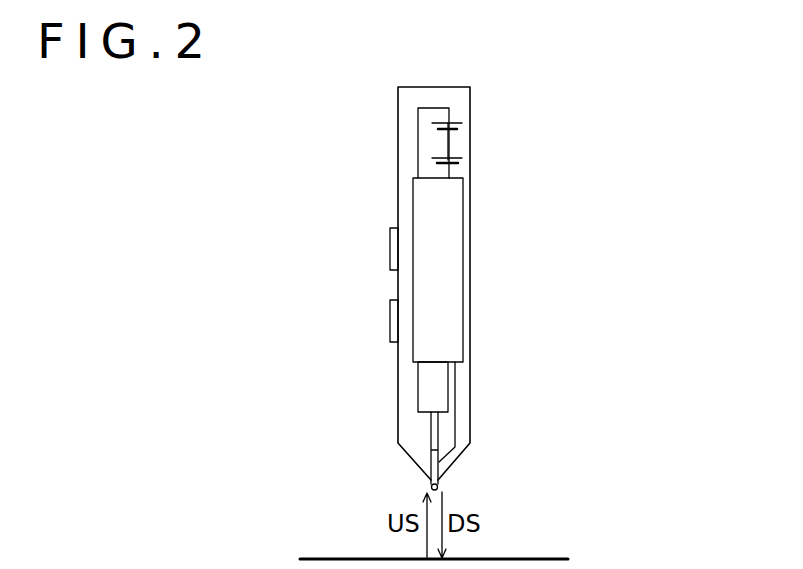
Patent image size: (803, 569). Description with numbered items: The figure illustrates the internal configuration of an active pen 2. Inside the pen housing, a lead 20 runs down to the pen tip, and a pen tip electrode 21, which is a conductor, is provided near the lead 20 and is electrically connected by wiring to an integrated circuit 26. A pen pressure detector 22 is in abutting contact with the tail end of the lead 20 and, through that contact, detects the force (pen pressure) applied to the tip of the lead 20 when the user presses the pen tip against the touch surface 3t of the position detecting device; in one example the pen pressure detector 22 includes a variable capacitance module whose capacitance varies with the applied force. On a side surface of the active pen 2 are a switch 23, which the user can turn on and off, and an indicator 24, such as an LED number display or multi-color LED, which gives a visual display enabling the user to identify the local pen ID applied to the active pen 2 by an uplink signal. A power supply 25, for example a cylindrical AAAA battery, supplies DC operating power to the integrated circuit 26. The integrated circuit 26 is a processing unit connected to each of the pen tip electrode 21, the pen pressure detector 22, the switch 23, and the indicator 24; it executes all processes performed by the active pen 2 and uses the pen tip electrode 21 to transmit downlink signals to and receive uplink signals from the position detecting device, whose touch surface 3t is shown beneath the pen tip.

The active pen 2 is at (470, 101).
The power supply 25 is at (448, 140).
The integrated circuit 26 is at (455, 197).
The indicator 24 is at (413, 248).
The switch 23 is at (413, 321).
The pen pressure detector 22 is at (440, 392).
The lead 20 is at (433, 432).
The pen tip electrode 21 is at (439, 484).
The touch surface 3t is at (328, 558).